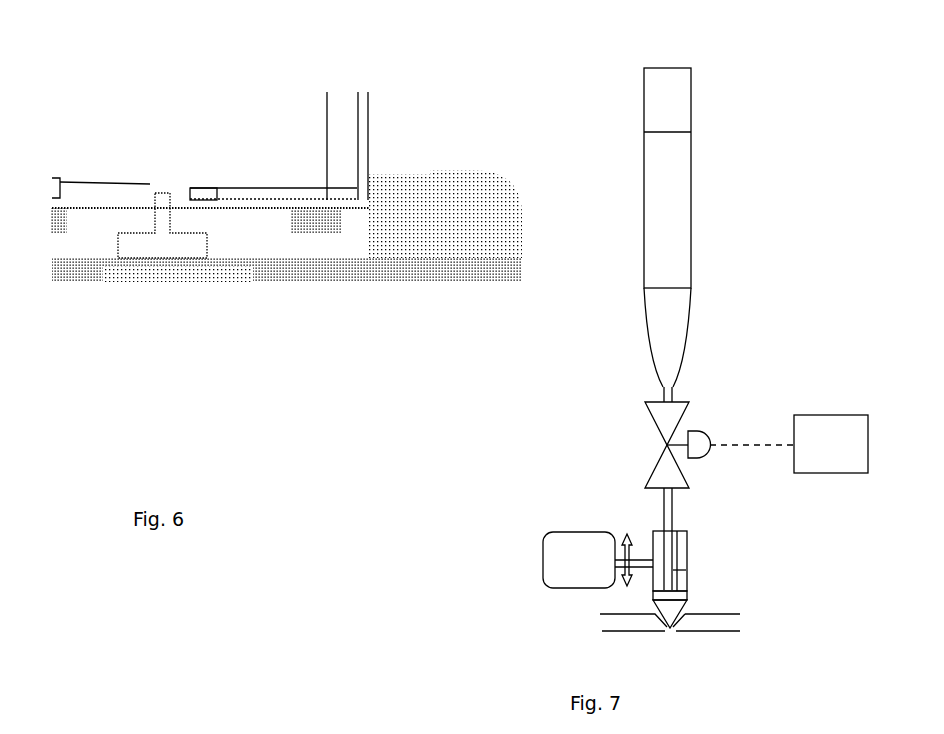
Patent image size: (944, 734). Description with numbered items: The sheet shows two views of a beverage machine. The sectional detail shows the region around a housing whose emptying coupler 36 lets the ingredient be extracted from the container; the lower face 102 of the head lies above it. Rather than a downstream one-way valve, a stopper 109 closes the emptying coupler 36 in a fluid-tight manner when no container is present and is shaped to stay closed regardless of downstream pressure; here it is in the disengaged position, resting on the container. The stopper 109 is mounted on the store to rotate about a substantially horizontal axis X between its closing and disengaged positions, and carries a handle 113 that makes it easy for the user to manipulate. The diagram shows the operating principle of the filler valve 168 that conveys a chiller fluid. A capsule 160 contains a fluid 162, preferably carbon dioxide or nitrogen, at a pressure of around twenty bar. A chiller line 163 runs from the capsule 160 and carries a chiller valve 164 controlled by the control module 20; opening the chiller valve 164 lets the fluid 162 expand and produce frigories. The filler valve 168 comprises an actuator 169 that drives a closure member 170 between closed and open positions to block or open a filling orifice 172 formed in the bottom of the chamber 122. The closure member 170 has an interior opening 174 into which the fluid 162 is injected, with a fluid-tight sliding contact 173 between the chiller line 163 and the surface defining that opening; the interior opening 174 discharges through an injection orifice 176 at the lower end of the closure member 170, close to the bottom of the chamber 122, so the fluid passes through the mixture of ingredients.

In FIG. 6, the lower face 102 is at (95, 257).
In FIG. 6, the stopper 109 is at (377, 138).
In FIG. 6, the handle 113 is at (378, 110).
In FIG. 6, the horizontal axis X is at (427, 238).
In FIG. 6, the emptying coupler 36 is at (320, 260).
In FIG. 7, the capsule 160 is at (695, 100).
In FIG. 7, the fluid 162 is at (676, 190).
In FIG. 7, the chiller valve 164 is at (677, 402).
In FIG. 7, the control module 20 is at (789, 444).
In FIG. 7, the chiller line 163 is at (676, 510).
In FIG. 7, the fluid-tight sliding contact 173 is at (678, 541).
In FIG. 7, the closure member 170 is at (682, 563).
In FIG. 7, the interior opening 174 is at (673, 578).
In FIG. 7, the injection orifice 176 is at (653, 592).
In FIG. 7, the chamber 122 is at (737, 615).
In FIG. 7, the filling orifice 172 is at (672, 628).
In FIG. 7, the filler valve 168 is at (580, 506).
In FIG. 7, the actuator 169 is at (598, 560).